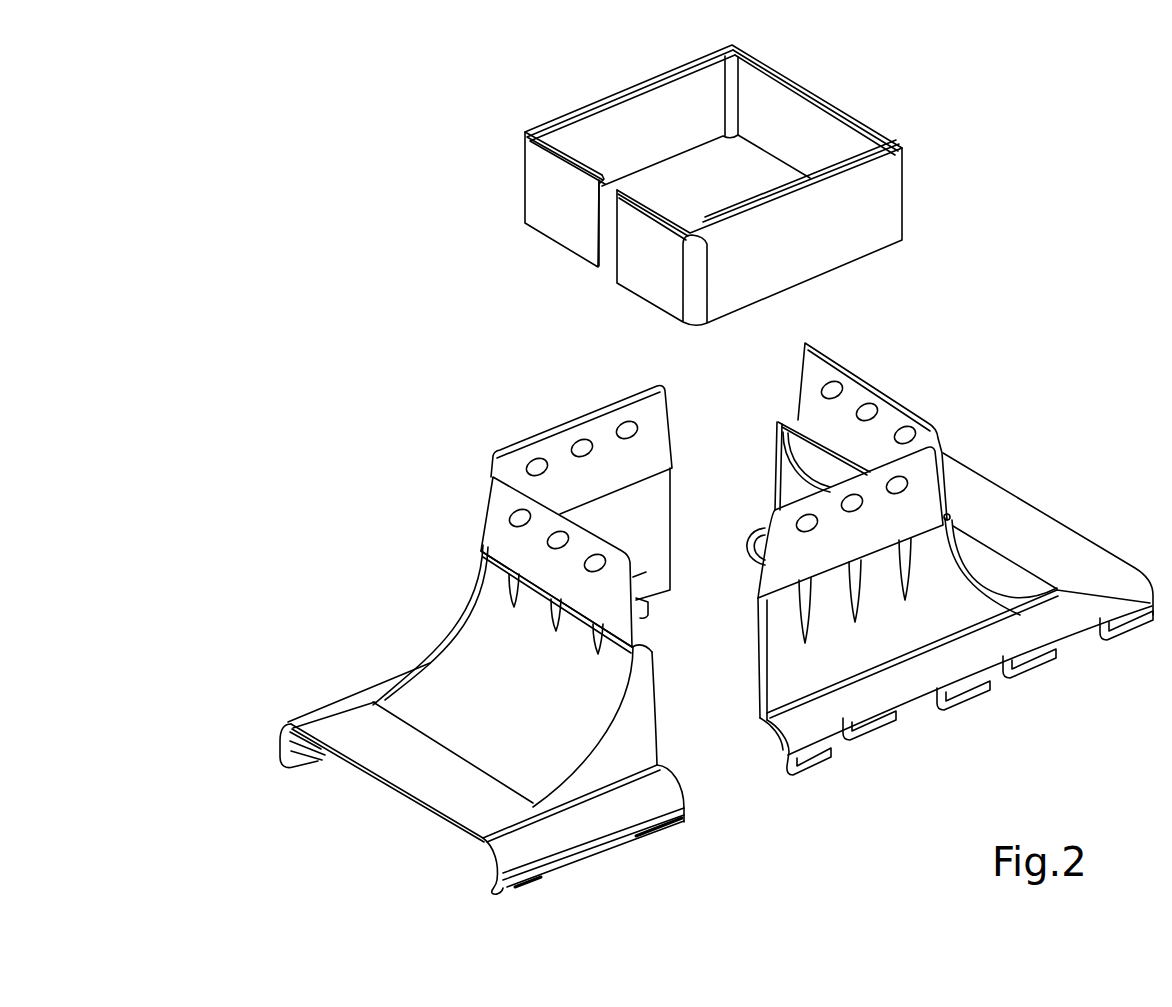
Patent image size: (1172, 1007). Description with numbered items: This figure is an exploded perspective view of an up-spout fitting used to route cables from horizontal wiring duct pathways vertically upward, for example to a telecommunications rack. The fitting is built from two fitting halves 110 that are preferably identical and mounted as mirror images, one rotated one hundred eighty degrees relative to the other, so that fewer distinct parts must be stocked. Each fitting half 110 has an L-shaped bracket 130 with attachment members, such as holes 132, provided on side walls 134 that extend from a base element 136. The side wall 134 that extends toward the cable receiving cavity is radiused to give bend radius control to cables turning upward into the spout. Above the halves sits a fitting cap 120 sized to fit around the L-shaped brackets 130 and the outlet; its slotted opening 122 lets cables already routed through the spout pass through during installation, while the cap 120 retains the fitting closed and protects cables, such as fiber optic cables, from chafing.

The fitting half 110 is at (677, 657).
The fitting cap 120 is at (556, 195).
The slotted opening 122 is at (605, 263).
The L-shaped bracket 130 is at (887, 413).
The hole 132 is at (822, 388).
The side wall 134 is at (672, 488).
The base element 136 is at (398, 747).